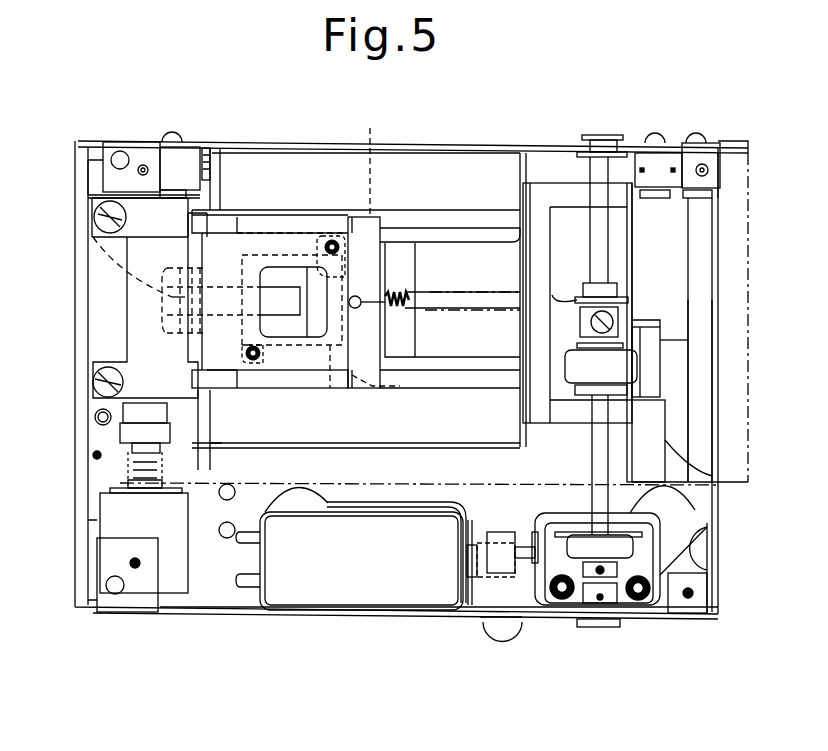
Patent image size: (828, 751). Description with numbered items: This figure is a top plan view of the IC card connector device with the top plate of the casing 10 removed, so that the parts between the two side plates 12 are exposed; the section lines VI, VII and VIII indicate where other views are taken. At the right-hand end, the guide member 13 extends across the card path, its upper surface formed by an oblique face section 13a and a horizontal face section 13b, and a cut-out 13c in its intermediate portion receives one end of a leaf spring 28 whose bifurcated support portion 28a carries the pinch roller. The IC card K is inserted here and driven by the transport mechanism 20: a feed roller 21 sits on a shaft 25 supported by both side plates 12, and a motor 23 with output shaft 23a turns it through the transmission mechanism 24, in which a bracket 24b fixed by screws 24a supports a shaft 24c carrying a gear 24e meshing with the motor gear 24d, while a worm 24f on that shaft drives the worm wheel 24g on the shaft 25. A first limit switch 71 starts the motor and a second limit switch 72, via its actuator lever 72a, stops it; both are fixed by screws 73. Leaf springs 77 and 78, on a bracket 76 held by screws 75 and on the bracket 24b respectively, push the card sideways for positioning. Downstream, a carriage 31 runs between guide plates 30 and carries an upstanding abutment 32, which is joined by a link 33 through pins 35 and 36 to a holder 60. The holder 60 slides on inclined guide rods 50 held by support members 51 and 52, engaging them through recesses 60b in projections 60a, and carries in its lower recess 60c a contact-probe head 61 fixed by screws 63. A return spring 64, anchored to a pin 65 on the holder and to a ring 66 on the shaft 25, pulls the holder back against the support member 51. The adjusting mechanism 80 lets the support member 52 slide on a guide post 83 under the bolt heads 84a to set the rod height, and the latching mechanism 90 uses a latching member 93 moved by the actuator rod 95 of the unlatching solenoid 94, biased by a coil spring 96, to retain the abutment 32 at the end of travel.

The casing 10 is at (350, 617).
The side plate 12 is at (433, 143).
The guide member 13 is at (718, 213).
The oblique face section 13a is at (700, 415).
The horizontal face section 13b is at (678, 353).
The cut-out 13c is at (657, 413).
The transport mechanism 20 is at (660, 312).
The feed roller 21 is at (575, 368).
The motor 23 is at (397, 588).
The output shaft 23a is at (470, 608).
The transmission mechanism 24 is at (632, 530).
The screws 24a is at (645, 598).
The bracket 24b is at (663, 573).
The shaft 24c is at (525, 547).
The gear 24d is at (473, 578).
The gear 24e is at (528, 624).
The worm 24f is at (577, 533).
The worm wheel 24g is at (603, 560).
The shaft 25 is at (595, 462).
The leaf spring 28 is at (675, 332).
The bifurcated support portion 28a is at (634, 345).
The guide plate 30 is at (335, 177).
The carriage 31 is at (403, 278).
The abutment 32 is at (103, 208).
The link 33 is at (257, 250).
The pin 35 is at (180, 277).
The pin 36 is at (290, 265).
The guide rod 50 is at (430, 223).
The support member 51 is at (552, 197).
The support member 52 is at (103, 338).
The holder 60 is at (222, 300).
The projection 60a is at (350, 217).
The recess 60b is at (398, 400).
The recess 60c is at (325, 262).
The contact-probe head 61 is at (345, 373).
The screws 63 is at (254, 362).
The return spring 64 is at (395, 316).
The pin 65 is at (355, 308).
The ring 66 is at (593, 283).
The first limit switch 71 is at (668, 162).
The second limit switch 72 is at (178, 150).
The actuator lever 72a is at (207, 150).
The screws 73 is at (177, 158).
The screws 75 is at (510, 630).
The bracket 76 is at (387, 507).
The leaf spring 77 is at (281, 505).
The leaf spring 78 is at (657, 490).
The adjusting mechanism 80 is at (103, 388).
The guide post 83 is at (130, 308).
The heads 84a is at (100, 212).
The latching mechanism 90 is at (98, 485).
The latching member 93 is at (157, 420).
The unlatching solenoid 94 is at (97, 525).
The actuator rod 95 is at (148, 486).
The coil spring 96 is at (128, 470).
The IC card K is at (740, 147).
The section VI is at (72, 326).
The section VII is at (564, 367).
The section VIII is at (433, 300).